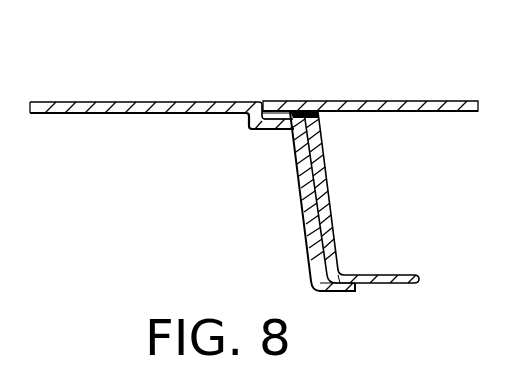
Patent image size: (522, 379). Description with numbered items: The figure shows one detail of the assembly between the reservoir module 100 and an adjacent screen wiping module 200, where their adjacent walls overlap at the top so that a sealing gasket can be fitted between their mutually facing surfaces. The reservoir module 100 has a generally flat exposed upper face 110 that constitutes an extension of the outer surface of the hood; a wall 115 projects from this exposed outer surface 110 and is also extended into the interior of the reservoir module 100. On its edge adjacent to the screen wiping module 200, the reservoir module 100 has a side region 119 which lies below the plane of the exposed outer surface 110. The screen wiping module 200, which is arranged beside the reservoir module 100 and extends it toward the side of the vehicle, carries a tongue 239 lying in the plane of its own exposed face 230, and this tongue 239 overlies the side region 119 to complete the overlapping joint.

The reservoir module 100 is at (167, 148).
The exposed upper face 110 is at (100, 103).
The wall 115 is at (277, 110).
The side region 119 is at (285, 129).
The screen wiping module 200 is at (377, 147).
The exposed upper surface of screen wiping module 230 is at (465, 100).
The tongue 239 is at (308, 98).